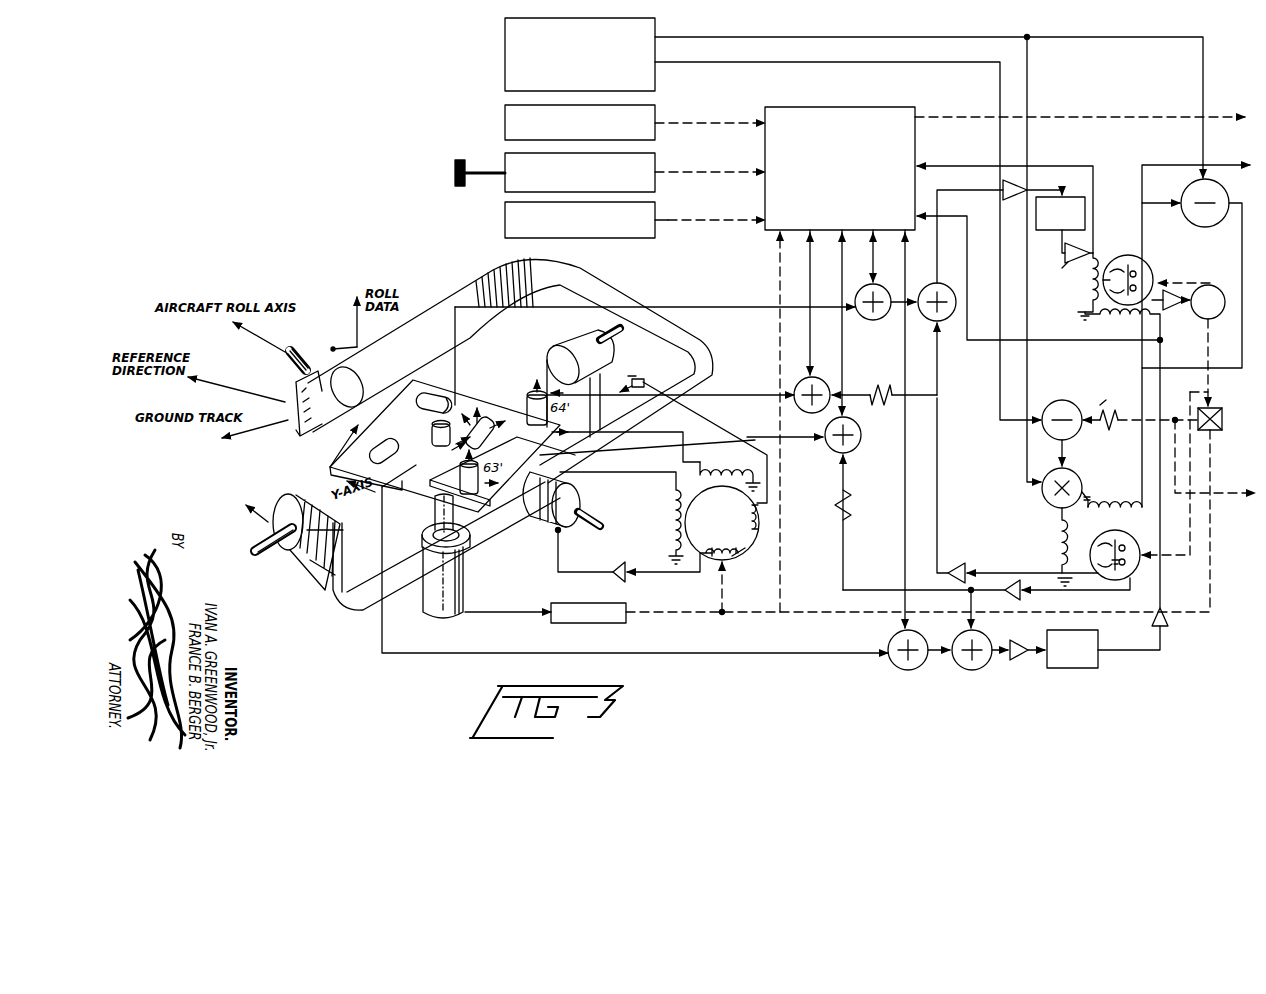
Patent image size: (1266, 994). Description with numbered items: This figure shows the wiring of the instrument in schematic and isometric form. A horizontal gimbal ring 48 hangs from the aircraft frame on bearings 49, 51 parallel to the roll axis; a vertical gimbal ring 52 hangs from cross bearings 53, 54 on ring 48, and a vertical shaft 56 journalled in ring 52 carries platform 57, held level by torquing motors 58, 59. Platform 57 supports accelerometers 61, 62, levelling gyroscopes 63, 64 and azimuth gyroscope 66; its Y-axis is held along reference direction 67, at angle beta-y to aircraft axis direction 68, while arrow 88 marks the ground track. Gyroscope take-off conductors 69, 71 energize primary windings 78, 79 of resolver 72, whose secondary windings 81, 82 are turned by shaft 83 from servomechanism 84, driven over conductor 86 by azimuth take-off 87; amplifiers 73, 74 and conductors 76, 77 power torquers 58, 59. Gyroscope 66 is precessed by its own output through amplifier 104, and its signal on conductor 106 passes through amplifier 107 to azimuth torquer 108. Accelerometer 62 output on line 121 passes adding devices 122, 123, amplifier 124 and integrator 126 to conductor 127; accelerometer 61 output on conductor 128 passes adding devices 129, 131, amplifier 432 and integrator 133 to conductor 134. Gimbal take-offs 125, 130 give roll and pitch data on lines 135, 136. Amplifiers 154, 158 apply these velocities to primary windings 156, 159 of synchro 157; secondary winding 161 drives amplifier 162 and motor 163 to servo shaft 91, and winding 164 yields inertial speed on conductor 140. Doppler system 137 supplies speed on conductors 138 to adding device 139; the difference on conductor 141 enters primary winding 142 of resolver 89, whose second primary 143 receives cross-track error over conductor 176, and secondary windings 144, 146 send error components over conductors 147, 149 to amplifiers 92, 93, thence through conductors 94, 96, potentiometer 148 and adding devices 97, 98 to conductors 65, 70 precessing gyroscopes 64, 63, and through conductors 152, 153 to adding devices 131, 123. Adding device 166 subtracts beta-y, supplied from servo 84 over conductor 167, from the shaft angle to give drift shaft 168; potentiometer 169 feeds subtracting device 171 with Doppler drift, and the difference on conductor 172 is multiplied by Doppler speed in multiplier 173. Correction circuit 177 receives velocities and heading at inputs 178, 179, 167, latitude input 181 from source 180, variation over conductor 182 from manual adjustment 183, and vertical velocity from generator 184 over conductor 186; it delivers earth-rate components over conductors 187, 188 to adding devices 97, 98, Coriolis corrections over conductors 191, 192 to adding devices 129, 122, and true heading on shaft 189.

The horizontal gimbal ring 48 is at (492, 278).
The bearing 49 is at (286, 367).
The bearing 51 is at (594, 521).
The second gimbal ring 52 is at (337, 605).
The cross bearing 53 is at (280, 556).
The cross bearing 54 is at (619, 342).
The vertical shaft 56 is at (432, 431).
The platform 57 is at (328, 468).
The torquing motor 58 is at (581, 498).
The torquing motor 59 is at (556, 345).
The accelerometer 61 is at (417, 405).
The accelerometer 62 is at (375, 448).
The gyroscope 63 is at (460, 482).
The gyroscope 64 is at (527, 400).
The conductor 65 is at (670, 385).
The third gyroscope 66 is at (486, 427).
The reference direction 67 is at (236, 386).
The aircraft axis direction 68 is at (253, 337).
The take-off conductor 69 is at (647, 456).
The conductor 70 is at (785, 427).
The take-off conductor 71 is at (622, 448).
The resolver 72 is at (722, 523).
The amplifier 73 is at (620, 566).
The amplifier 74 is at (636, 390).
The conductor 76 is at (559, 568).
The conductor 77 is at (638, 379).
The primary winding 78 is at (672, 492).
The primary winding 79 is at (730, 470).
The secondary winding 81 is at (732, 560).
The secondary winding 82 is at (763, 517).
The shaft 83 is at (711, 588).
The position servomechanism 84 is at (620, 606).
The conductor 86 is at (508, 601).
The azimuth take-off 87 is at (437, 616).
The ground track direction 88 is at (255, 436).
The second resolver 89 is at (1122, 555).
The shaft 91 is at (1176, 408).
The amplifier 92 is at (956, 568).
The amplifier 93 is at (1010, 586).
The conductor 94 is at (884, 385).
The conductor 96 is at (848, 525).
The algebraic adding device 97 is at (814, 387).
The algebraic adding device 98 is at (851, 435).
The amplifier 104 is at (449, 449).
The conductor 106 is at (430, 480).
The amplifier 107 is at (428, 510).
The azimuth torquer 108 is at (424, 528).
The output conductors 121 is at (381, 531).
The algebraic adding device 122 is at (916, 640).
The adding device 123 is at (980, 640).
The amplifier 124 is at (1016, 640).
The gimbal bearing take-off device 125 is at (299, 383).
The integrator 126 is at (1088, 630).
The conductor 127 is at (1129, 640).
The output conductor 128 is at (455, 372).
The Coriolis correction adding device 129 is at (886, 322).
The gimbal bearing take-off device 130 is at (274, 547).
The damping term adding device 131 is at (940, 291).
The integrator 133 is at (1066, 197).
The conductor 134 is at (1062, 252).
The data output line 135 is at (357, 322).
The data output line 136 is at (260, 509).
The Doppler system 137 is at (505, 63).
The conductors 138 is at (1027, 470).
The algebraic adding device 139 is at (1228, 196).
The conductor 140 is at (1172, 266).
The conductor 141 is at (1236, 264).
The primary winding 142 is at (1133, 497).
The second primary winding 143 is at (1058, 538).
The secondary winding 144 is at (1108, 542).
The secondary winding 146 is at (1124, 540).
The conductor 147 is at (1032, 568).
The control potentiometer 148 is at (880, 385).
The conductor 149 is at (1105, 594).
The conductor 152 is at (940, 374).
The conductor 153 is at (968, 600).
The amplifier 154 is at (1054, 267).
The primary winding 156 is at (1088, 290).
The synchro 157 is at (1128, 265).
The amplifier 158 is at (1170, 618).
The second primary winding 159 is at (1122, 324).
The secondary winding 161 is at (1140, 289).
The amplifier 162 is at (1171, 308).
The motor 163 is at (1216, 288).
The secondary winding 164 is at (1140, 275).
The algebraic adding device 166 is at (1218, 432).
The conductor 167 is at (778, 244).
The shaft 168 is at (1168, 502).
The potentiometer 169 is at (1102, 392).
The subtracting device 171 is at (1070, 400).
The conductor 172 is at (1062, 455).
The multiplying device 173 is at (1078, 476).
The conductor 176 is at (1058, 510).
The correction circuit 177 is at (913, 107).
The input connection 178 is at (1025, 201).
The input connection 179 is at (1040, 271).
The latitude source 180 is at (505, 215).
The latitude input 181 is at (710, 209).
The conductor 182 is at (710, 161).
The manual adjustment 183 is at (460, 160).
The generator 184 is at (505, 127).
The conductor 186 is at (710, 112).
The conductor 187 is at (828, 322).
The conductor 188 is at (797, 302).
The output shaft 189 is at (1080, 111).
The conductor 191 is at (860, 256).
The conductor 192 is at (891, 429).
The amplifier 432 is at (1013, 198).